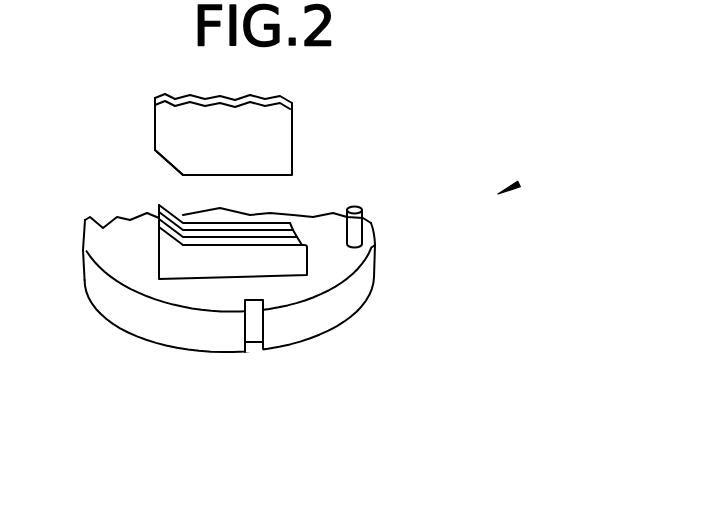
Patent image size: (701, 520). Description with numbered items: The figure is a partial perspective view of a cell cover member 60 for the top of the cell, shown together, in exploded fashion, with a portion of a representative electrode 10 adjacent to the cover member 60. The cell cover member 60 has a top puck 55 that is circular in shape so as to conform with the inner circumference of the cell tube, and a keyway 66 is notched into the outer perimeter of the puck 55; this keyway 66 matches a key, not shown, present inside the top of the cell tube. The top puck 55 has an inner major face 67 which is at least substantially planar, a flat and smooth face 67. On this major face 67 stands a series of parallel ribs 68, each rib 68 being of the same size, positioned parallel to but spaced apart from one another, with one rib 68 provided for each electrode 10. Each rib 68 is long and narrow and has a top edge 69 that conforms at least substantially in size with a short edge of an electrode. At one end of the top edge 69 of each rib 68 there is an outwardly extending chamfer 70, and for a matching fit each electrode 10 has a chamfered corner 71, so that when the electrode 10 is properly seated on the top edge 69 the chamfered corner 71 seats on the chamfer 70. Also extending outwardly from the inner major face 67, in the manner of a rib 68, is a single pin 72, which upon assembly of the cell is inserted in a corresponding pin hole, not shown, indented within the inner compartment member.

The electrode 10 is at (262, 143).
The chamfered corner 71 is at (167, 167).
The outwardly extending chamfer 70 is at (170, 247).
The top edge 69 is at (282, 222).
The rib 68 is at (298, 263).
The pin 72 is at (360, 228).
The cell cover member 60 is at (519, 184).
The inner major face 67 is at (100, 247).
The top puck 55 is at (117, 307).
The keyway 66 is at (255, 350).